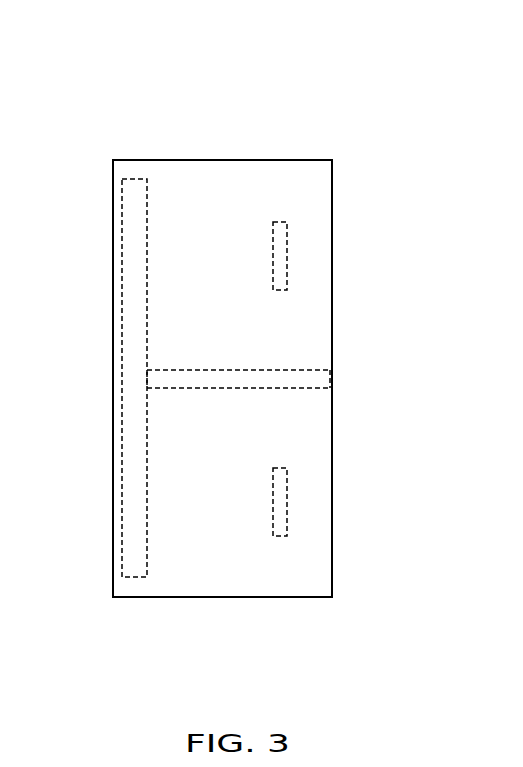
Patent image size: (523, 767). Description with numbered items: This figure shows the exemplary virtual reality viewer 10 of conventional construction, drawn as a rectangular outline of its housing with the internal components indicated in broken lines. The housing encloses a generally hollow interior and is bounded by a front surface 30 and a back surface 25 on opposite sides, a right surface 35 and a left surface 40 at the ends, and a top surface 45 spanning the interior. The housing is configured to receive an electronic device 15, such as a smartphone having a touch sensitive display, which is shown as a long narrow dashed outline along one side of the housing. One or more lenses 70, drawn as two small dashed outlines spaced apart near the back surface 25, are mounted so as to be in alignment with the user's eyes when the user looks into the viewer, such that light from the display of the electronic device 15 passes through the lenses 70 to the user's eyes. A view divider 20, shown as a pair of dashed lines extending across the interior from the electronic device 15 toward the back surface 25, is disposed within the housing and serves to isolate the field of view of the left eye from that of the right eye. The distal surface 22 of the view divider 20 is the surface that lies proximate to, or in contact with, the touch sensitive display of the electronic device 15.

The viewer 10 is at (399, 104).
The electronic device 15 is at (128, 183).
The view divider 20 is at (332, 380).
The distal surface 22 is at (147, 372).
The back surface 25 is at (340, 285).
The front surface 30 is at (106, 339).
The right surface 35 is at (214, 152).
The left surface 40 is at (250, 606).
The top surface 45 is at (228, 229).
The lenses 70 is at (286, 242).